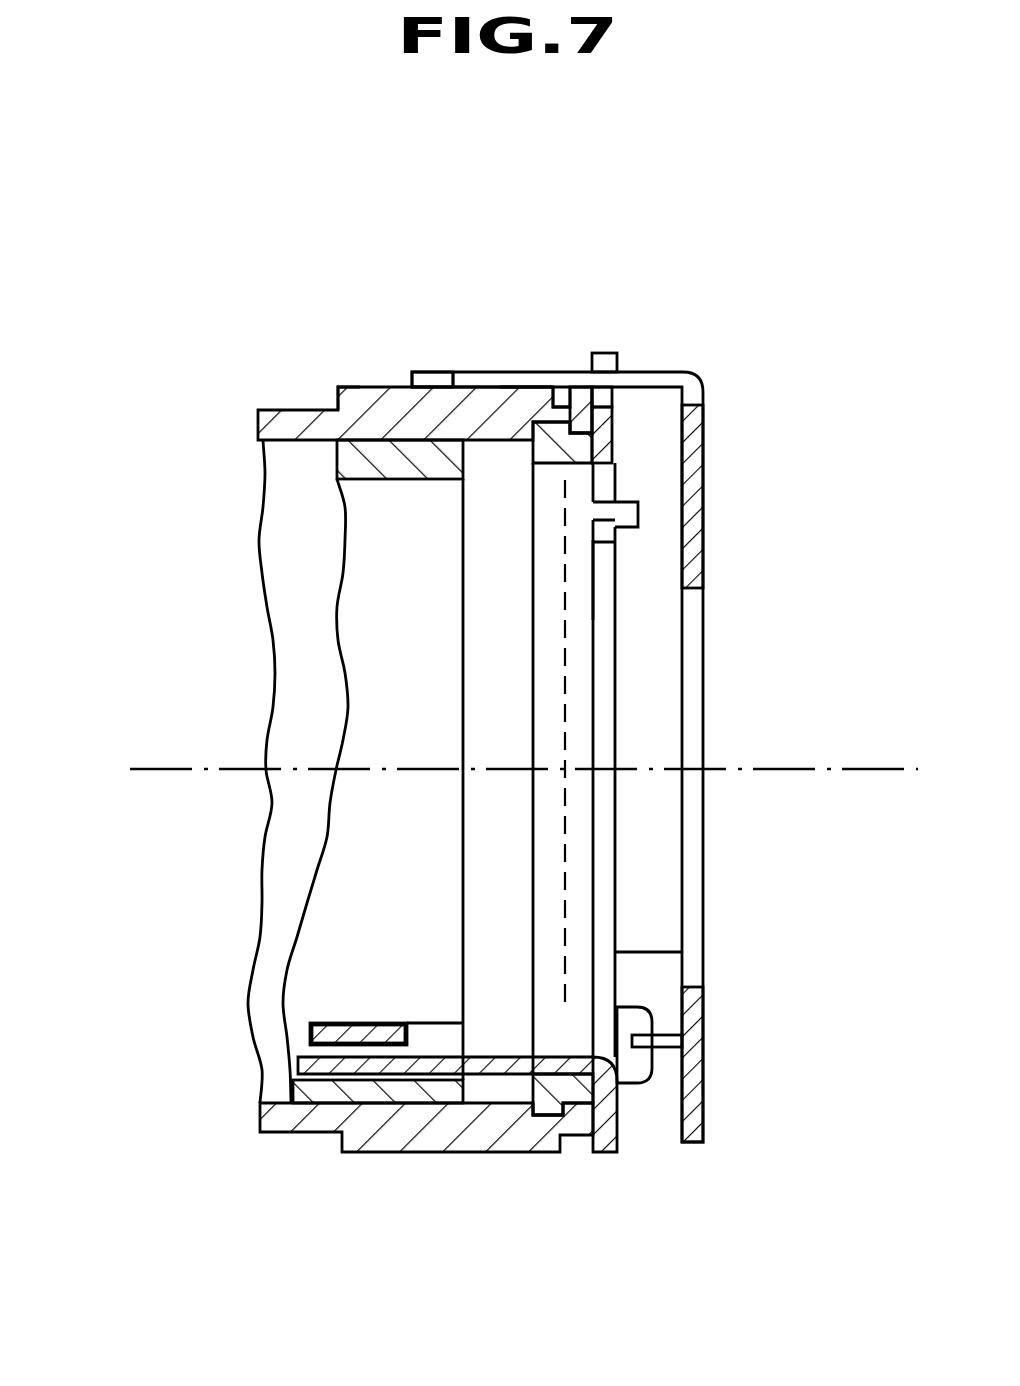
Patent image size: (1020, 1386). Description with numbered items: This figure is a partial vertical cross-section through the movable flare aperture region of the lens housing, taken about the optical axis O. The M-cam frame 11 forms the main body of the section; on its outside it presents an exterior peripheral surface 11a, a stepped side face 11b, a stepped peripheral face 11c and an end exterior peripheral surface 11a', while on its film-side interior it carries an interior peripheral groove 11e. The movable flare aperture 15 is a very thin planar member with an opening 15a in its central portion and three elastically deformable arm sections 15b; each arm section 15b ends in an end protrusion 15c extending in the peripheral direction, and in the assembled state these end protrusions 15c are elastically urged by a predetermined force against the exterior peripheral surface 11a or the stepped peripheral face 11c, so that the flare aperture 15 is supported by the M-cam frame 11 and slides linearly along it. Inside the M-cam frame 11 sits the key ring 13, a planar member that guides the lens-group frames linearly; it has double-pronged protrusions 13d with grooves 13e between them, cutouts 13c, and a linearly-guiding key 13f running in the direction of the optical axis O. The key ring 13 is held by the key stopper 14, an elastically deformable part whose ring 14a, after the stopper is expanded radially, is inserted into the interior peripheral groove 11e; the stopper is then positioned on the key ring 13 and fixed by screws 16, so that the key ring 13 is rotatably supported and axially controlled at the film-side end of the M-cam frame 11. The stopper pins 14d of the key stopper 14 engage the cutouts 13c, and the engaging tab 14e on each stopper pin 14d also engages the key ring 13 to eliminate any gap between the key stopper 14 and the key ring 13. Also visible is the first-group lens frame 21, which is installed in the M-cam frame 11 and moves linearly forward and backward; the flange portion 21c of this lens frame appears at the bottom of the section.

The M-cam frame 11 is at (265, 410).
The exterior peripheral surface 11a is at (314, 322).
The stepped side face 11b is at (520, 387).
The end exterior peripheral surface 11a' is at (598, 275).
The stepped peripheral face 11c is at (568, 392).
The interior peripheral groove 11e is at (545, 1152).
The key ring 13 is at (603, 883).
The cutout 13c is at (578, 522).
The double-pronged protrusion 13d is at (620, 357).
The groove 13e is at (613, 410).
The linearly-guiding key 13f is at (360, 1030).
The key stopper 14 is at (580, 825).
The ring 14a is at (445, 1048).
The stopper pin 14d is at (640, 505).
The engaging tab 14e is at (638, 528).
The movable flare aperture 15 is at (703, 867).
The opening 15a is at (692, 978).
The arm section 15b is at (703, 380).
The end protrusion 15c is at (433, 372).
The screw 16 is at (645, 1085).
The group-1 lens frame 21 is at (348, 478).
The flange of lens 21c is at (440, 1083).
The optical axis O is at (160, 768).